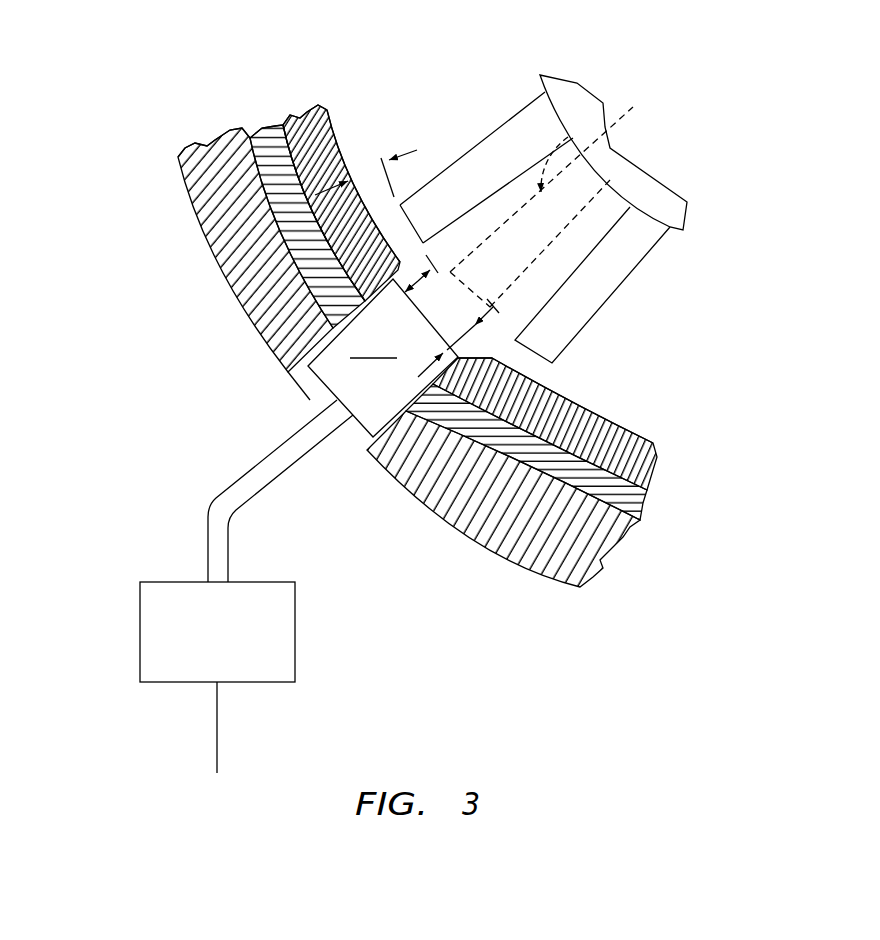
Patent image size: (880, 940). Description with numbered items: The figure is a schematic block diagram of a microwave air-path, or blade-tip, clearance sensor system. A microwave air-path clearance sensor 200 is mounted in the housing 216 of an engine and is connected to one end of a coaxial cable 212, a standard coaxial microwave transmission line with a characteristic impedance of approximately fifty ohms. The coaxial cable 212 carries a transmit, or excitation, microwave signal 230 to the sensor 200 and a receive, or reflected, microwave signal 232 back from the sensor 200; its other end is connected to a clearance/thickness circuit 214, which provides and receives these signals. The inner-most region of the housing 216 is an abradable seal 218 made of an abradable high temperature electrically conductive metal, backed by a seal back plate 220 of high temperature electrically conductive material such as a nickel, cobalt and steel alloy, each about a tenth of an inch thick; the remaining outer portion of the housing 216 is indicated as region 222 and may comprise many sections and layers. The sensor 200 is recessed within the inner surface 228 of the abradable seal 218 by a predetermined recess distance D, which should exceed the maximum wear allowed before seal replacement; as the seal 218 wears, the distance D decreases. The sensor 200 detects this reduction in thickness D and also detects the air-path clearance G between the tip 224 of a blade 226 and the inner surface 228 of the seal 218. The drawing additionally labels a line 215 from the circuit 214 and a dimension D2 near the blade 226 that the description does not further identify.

The microwave air-path clearance sensor 200 is at (383, 358).
The coaxial cable 212 is at (300, 430).
The clearance/thickness circuit 214 is at (160, 580).
The output line 215 is at (217, 725).
The housing 216 is at (183, 142).
The abradable seal 218 is at (310, 140).
The seal back plate 220 is at (265, 148).
The outer portion of the housing 222 is at (255, 213).
The tip 224 is at (337, 258).
The blade 226 is at (512, 127).
The inner surface 228 is at (337, 130).
The transmit microwave signal 230 is at (300, 460).
The receive microwave signal 232 is at (215, 487).
The air-path clearance G is at (366, 173).
The recess distance D is at (456, 325).
The distance D2 is at (430, 270).